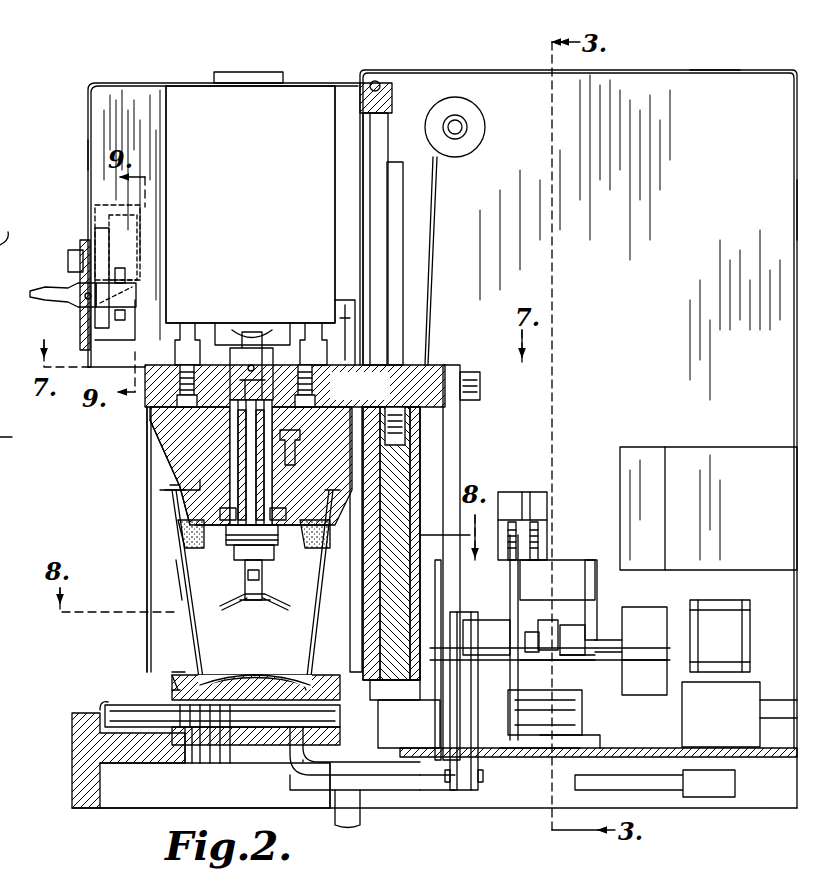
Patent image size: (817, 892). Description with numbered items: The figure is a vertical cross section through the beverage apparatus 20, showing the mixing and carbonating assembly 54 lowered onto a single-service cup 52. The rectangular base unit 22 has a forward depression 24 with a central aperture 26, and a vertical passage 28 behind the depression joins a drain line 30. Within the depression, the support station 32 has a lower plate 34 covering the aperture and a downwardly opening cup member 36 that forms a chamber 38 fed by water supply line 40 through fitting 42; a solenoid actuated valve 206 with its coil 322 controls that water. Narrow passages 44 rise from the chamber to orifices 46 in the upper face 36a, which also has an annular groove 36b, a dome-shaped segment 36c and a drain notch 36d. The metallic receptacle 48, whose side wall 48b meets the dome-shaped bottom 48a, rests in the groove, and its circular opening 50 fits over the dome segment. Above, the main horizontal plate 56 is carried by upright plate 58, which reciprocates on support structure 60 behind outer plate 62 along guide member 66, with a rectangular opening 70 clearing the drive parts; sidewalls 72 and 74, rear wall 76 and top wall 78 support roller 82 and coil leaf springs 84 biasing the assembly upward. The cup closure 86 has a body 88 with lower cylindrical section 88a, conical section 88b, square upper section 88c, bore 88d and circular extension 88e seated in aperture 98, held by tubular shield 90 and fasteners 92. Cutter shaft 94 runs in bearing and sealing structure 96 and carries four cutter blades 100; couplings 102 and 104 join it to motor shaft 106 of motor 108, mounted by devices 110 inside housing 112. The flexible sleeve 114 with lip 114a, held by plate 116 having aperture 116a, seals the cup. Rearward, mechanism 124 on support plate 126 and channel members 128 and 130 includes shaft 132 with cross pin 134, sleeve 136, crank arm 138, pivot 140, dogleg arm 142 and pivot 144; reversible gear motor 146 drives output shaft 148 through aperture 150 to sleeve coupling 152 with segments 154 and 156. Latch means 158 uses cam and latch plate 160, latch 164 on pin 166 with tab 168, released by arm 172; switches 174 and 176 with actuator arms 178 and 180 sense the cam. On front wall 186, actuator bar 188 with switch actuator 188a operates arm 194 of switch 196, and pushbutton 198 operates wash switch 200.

The apparatus 20 is at (373, 70).
The base unit 22 is at (86, 808).
The depression 24 is at (100, 715).
The aperture 26 is at (194, 765).
The vertical passage 28 is at (409, 724).
The drain line 30 is at (350, 826).
The support station 32 is at (160, 704).
The lower plate 34 is at (234, 758).
The cup member 36 is at (268, 710).
The upper face 36a is at (181, 673).
The annular groove 36b is at (296, 677).
The dome-shaped segment 36c is at (244, 673).
The notch 36d is at (340, 666).
The chamber 38 is at (160, 746).
The water supply line 40 is at (390, 798).
The fitting 42 is at (288, 748).
The passages 44 is at (172, 692).
The orifices 46 is at (173, 673).
The receptacle 48 is at (172, 566).
The bottom 48a is at (224, 675).
The side wall 48b is at (180, 584).
The circular opening 50 is at (262, 675).
The single-service cup 52 is at (166, 500).
The mixing and carbonating assembly 54 is at (236, 70).
The main horizontal plate 56 is at (150, 402).
The upright plate 58 is at (410, 457).
The support structure 60 is at (392, 98).
The outer plate 62 is at (418, 495).
The vertical guide member 66 is at (402, 193).
The rectangular opening 70 is at (384, 148).
The sidewall 72 is at (13, 232).
The sidewall 74 is at (660, 225).
The rear wall 76 is at (796, 210).
The top wall 78 is at (715, 70).
The roller 82 is at (478, 125).
The coil leaf springs 84 is at (432, 257).
The cup closure 86 is at (164, 456).
The body 88 is at (312, 474).
The lower cylindrical section 88a is at (180, 490).
The conical section 88b is at (160, 445).
The square upper section 88c is at (360, 386).
The bore 88d is at (220, 500).
The circular extension 88e is at (208, 424).
The tubular shield 90 is at (147, 622).
The releasable fasteners 92 is at (16, 444).
The cutter shaft 94 is at (266, 572).
The bearing and sealing structure 96 is at (254, 546).
The aperture 98 is at (276, 388).
The cutter blades 100 is at (282, 592).
The segmental coupling 102 is at (246, 386).
The segmental coupling 104 is at (262, 348).
The motor shaft 106 is at (248, 348).
The motor 108 is at (250, 204).
The fastening and spacing devices 110 is at (352, 333).
The housing 112 is at (86, 127).
The flexible annular sleeve 114 is at (178, 542).
The lip 114a is at (292, 503).
The plate 116 is at (322, 540).
The aperture 116a is at (298, 538).
The mechanism 124 is at (560, 558).
The upright support plate 126 is at (500, 494).
The channel member 128 is at (438, 572).
The channel member 130 is at (576, 562).
The shaft 132 is at (399, 690).
The cross pin 134 is at (546, 618).
The sleeve 136 is at (482, 620).
The crank arm 138 is at (470, 792).
The pivot 140 is at (446, 772).
The dogleg arm 142 is at (461, 418).
The pivot 144 is at (472, 372).
The reversible gear motor 146 is at (708, 508).
The output shaft 148 is at (607, 644).
The aperture 150 is at (578, 625).
The sleeve coupling 152 is at (602, 658).
The segment 154 is at (557, 671).
The segment 156 is at (540, 630).
The latch means 158 is at (545, 758).
The cam and latch plate 160 is at (500, 580).
The latch 164 is at (565, 752).
The pin 166 is at (592, 738).
The tab 168 is at (545, 712).
The arm 172 is at (579, 635).
The switch 174 is at (508, 492).
The switch 176 is at (541, 492).
The actuator arm 178 is at (518, 530).
The actuator arm 180 is at (540, 535).
The front wall 186 is at (87, 153).
The closure actuator bar 188 is at (46, 290).
The switch actuator 188a is at (125, 300).
The actuator arm 194 is at (125, 272).
The switch 196 is at (135, 320).
The pushbutton 198 is at (68, 258).
The switch 200 is at (145, 210).
The solenoid actuated valve 206 is at (721, 714).
The coil 322 is at (732, 625).